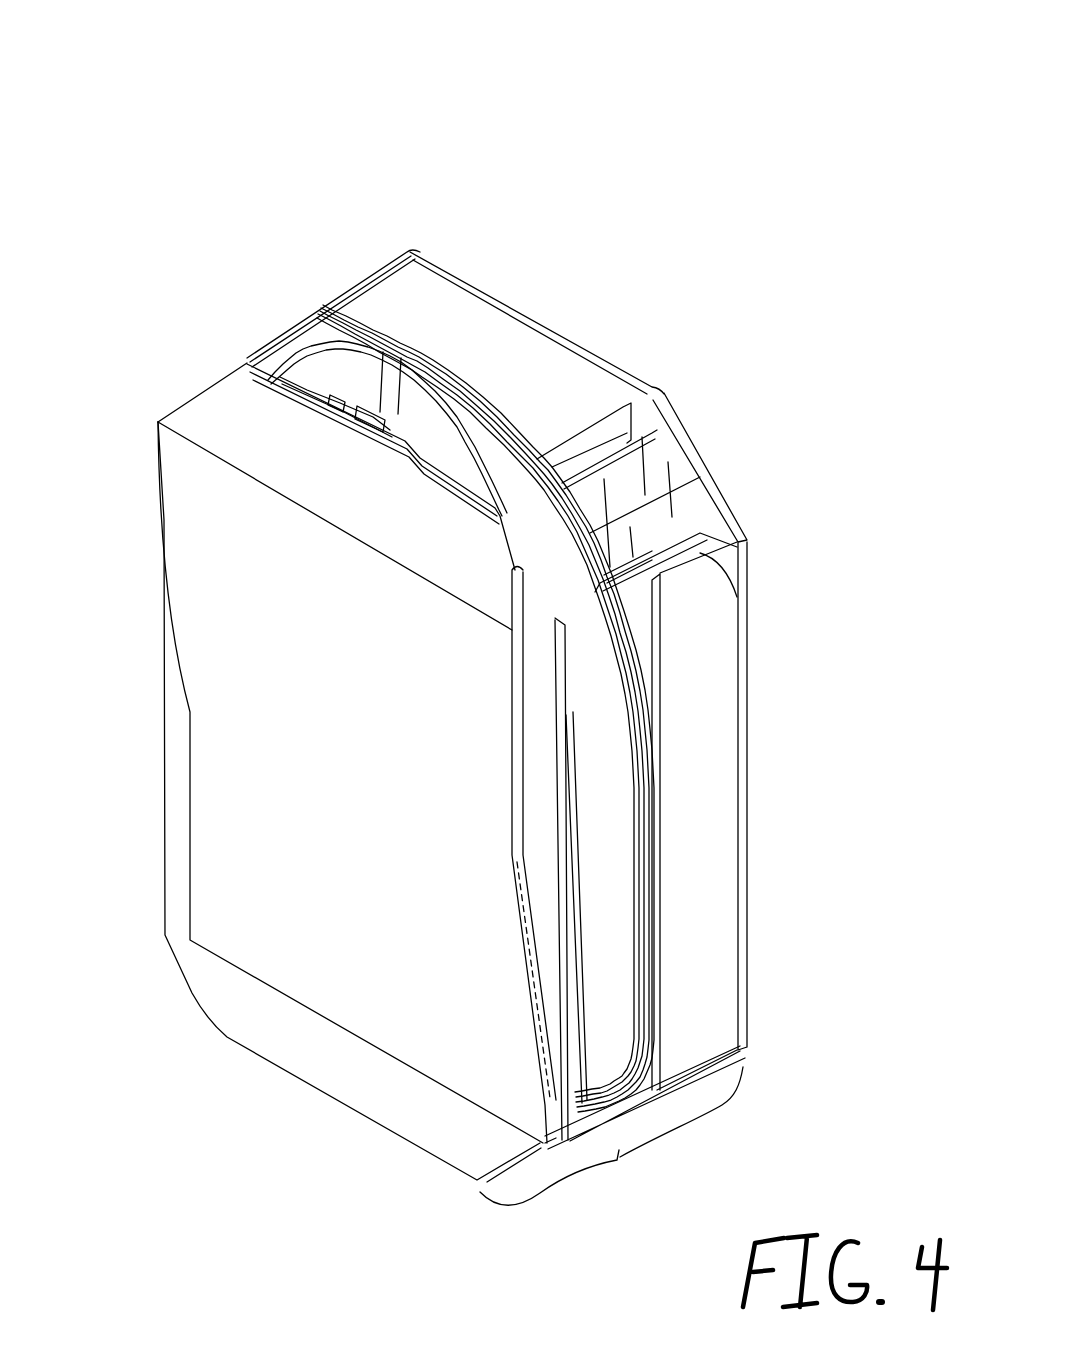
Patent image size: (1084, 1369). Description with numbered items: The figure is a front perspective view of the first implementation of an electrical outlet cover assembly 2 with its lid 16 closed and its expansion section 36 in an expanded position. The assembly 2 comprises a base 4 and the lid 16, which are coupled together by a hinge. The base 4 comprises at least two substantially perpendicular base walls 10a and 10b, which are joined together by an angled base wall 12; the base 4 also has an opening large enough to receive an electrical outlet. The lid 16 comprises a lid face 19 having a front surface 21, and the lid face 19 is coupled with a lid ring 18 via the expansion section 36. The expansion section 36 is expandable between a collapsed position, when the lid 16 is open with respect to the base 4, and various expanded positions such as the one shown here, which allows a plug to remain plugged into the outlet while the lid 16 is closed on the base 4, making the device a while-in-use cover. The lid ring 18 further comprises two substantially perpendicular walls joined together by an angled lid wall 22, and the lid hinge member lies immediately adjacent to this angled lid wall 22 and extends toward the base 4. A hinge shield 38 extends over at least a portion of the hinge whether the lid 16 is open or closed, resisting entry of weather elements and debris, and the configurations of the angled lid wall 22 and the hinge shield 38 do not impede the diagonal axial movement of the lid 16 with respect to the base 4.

The electrical outlet cover assembly 2 is at (689, 85).
The base 4 is at (743, 1052).
The base wall 10a is at (620, 365).
The base wall 10b is at (743, 600).
The angled base wall 12 is at (670, 412).
The lid 16 is at (615, 1212).
The lid ring 18 is at (452, 123).
The lid face 19 is at (203, 395).
The front surface 21 is at (210, 632).
The angled lid wall 22 is at (553, 460).
The expansion section 36 is at (328, 362).
The hinge shield 38 is at (635, 490).